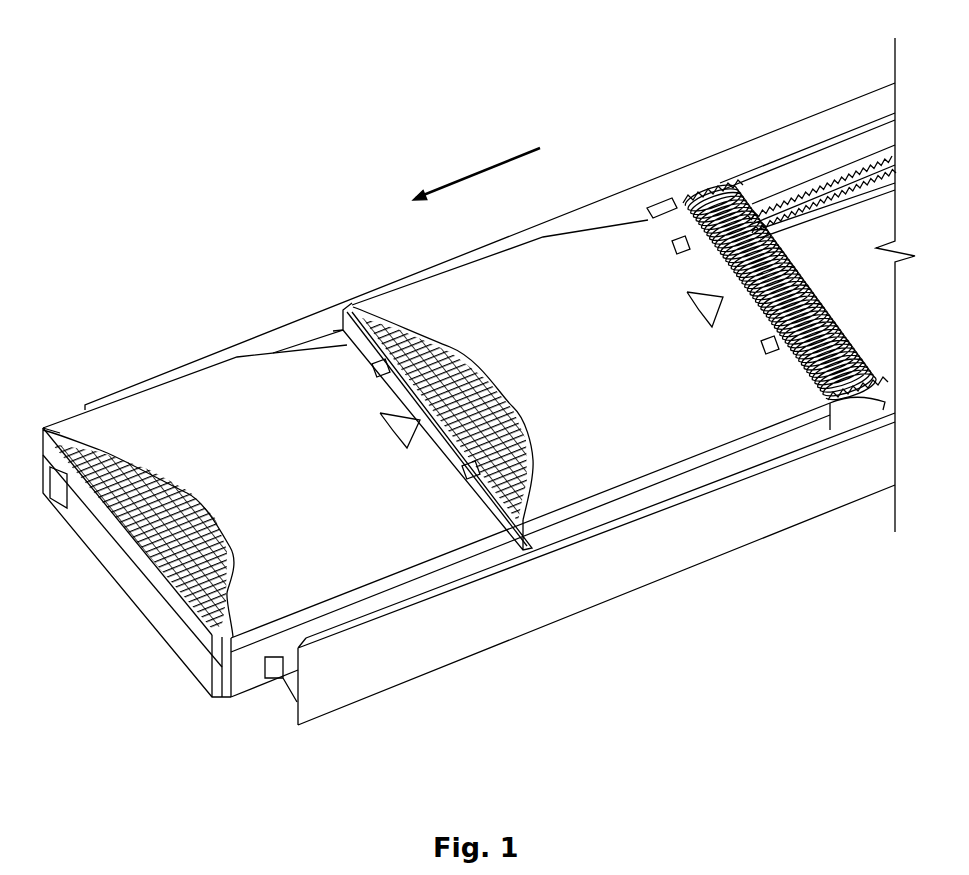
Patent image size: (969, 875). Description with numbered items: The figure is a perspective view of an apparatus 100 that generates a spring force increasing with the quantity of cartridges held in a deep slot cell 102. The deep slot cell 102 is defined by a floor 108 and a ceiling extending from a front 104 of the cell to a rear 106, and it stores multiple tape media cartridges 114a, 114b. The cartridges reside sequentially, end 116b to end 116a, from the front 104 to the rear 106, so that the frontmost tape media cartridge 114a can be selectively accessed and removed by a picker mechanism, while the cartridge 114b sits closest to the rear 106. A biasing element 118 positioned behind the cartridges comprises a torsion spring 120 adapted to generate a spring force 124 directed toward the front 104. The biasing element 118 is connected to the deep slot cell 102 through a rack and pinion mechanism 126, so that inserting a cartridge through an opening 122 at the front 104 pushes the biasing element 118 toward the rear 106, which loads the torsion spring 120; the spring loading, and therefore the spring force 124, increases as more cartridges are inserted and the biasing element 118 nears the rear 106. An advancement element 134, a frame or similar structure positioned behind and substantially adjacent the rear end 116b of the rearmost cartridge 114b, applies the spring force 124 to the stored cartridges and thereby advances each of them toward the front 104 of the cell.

The apparatus 100 is at (288, 60).
The deep slot cell 102 is at (803, 102).
The front 104 is at (297, 710).
The rear 106 is at (880, 226).
The floor 108 is at (862, 292).
The frontmost tape media cartridge 114a is at (320, 469).
The tape media cartridge 114b is at (628, 364).
The end 116a is at (43, 428).
The rear end 116b is at (333, 330).
The biasing element 118 is at (693, 180).
The torsion spring 120 is at (787, 258).
The opening 122 is at (270, 698).
The spring force 124 is at (473, 172).
The rack and pinion mechanism 126 is at (837, 180).
The advancement element 134 is at (847, 413).